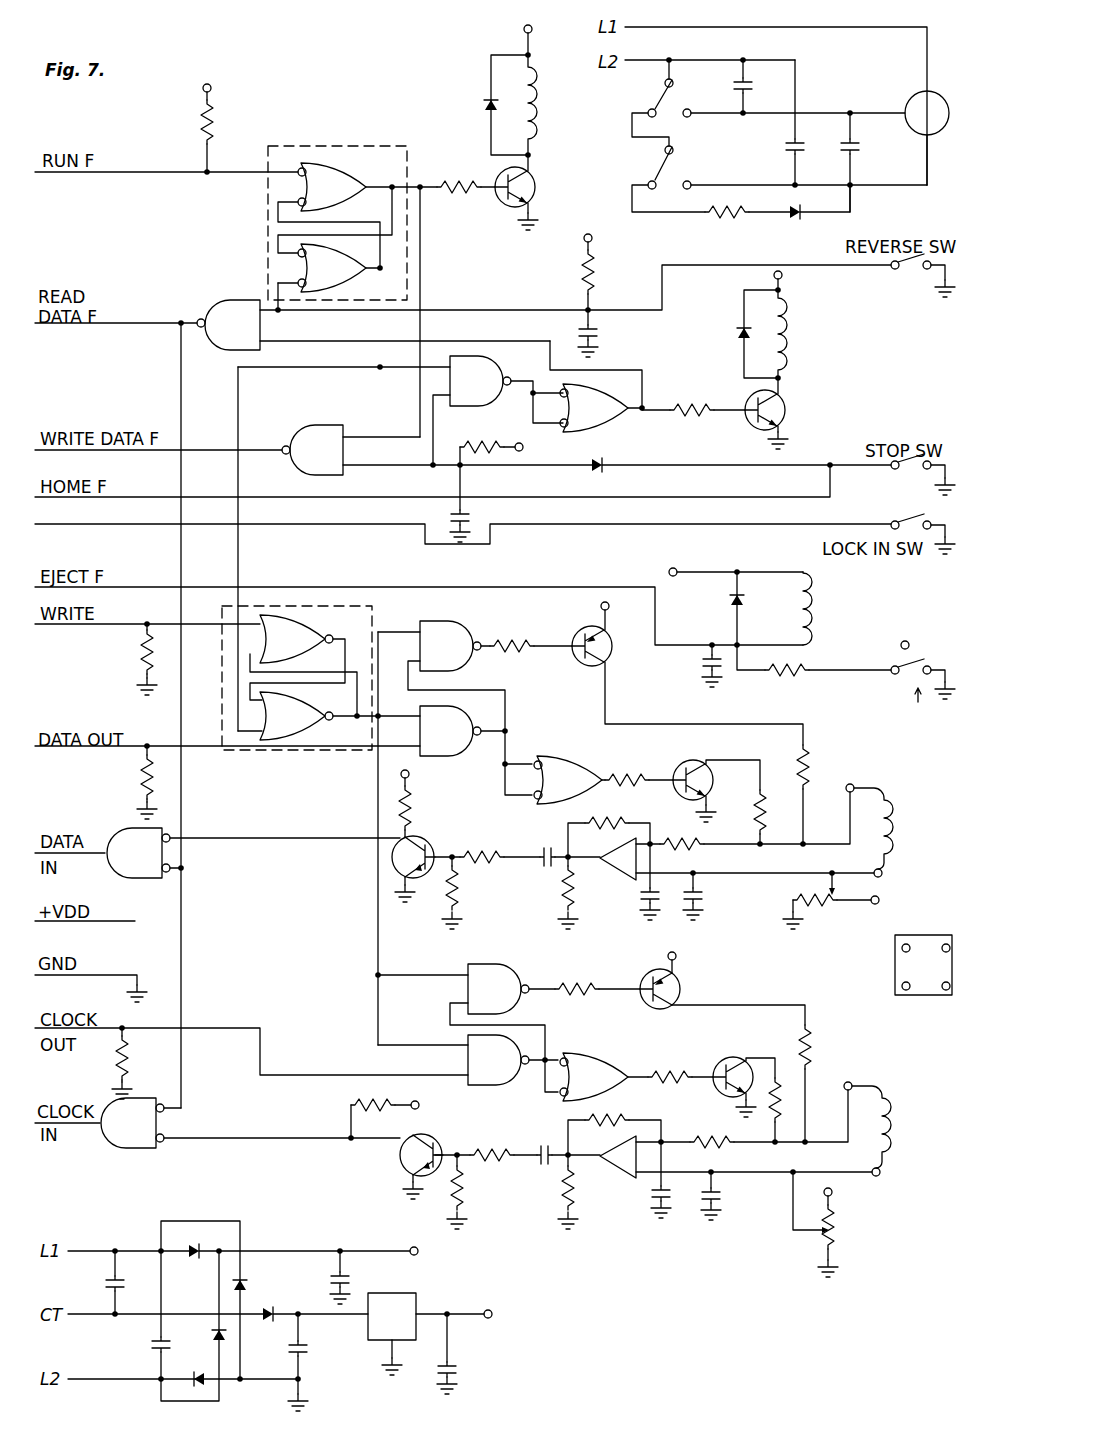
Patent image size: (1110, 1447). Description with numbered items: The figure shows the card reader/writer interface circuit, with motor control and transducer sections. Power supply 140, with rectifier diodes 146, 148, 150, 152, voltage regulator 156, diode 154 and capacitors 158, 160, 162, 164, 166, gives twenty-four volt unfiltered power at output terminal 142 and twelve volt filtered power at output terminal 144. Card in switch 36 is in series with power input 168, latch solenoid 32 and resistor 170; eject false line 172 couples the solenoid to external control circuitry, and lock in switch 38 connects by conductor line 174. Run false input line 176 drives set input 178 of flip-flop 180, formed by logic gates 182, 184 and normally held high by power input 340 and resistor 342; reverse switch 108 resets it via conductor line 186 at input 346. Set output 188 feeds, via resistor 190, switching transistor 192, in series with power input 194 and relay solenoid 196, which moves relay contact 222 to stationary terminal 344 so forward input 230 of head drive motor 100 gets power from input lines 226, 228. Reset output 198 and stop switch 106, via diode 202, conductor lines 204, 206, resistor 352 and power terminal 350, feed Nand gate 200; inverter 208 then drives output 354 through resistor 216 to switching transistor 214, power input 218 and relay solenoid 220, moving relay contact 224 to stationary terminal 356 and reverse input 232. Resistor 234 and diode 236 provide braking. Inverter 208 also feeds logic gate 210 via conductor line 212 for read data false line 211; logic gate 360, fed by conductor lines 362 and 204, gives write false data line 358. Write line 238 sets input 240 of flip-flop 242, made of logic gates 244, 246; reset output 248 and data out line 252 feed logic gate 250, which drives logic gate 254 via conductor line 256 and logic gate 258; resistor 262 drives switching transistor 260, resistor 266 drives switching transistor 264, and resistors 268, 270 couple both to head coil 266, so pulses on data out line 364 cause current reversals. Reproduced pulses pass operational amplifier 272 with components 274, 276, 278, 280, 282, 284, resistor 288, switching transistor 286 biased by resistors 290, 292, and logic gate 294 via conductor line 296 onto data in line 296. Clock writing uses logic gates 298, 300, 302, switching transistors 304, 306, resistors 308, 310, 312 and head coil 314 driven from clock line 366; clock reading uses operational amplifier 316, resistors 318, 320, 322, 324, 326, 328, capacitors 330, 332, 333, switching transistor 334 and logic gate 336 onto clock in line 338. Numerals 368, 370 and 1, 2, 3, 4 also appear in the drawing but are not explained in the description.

The solenoid 32 is at (812, 600).
The in/out switch 36 is at (914, 696).
The lock-in switch 38 is at (908, 518).
The motor 100 is at (919, 92).
The stop switch 106 is at (914, 474).
The reverse switch 108 is at (916, 280).
The power supply 140 is at (458, 1283).
The output terminal 142 is at (418, 1251).
The output terminal 144 is at (492, 1310).
The diode 146 is at (199, 1246).
The diode 148 is at (246, 1283).
The diode 150 is at (212, 1333).
The diode 152 is at (205, 1372).
The diode 154 is at (275, 1319).
The voltage regulator 156 is at (402, 1292).
The capacitor 158 is at (100, 1278).
The capacitor 160 is at (150, 1352).
The capacitor 162 is at (305, 1343).
The capacitor 164 is at (330, 1268).
The capacitor 166 is at (452, 1362).
The terminal 168 is at (677, 568).
The resistor 170 is at (790, 668).
The eject line 172 is at (380, 585).
The lock-in line 174 is at (145, 526).
The run line 176 is at (162, 172).
The gate 178 is at (296, 163).
The flip-flop 180 is at (375, 146).
The output line 182 is at (365, 179).
The gate 184 is at (345, 253).
The line 186 is at (455, 310).
The junction 188 is at (419, 183).
The resistor 190 is at (474, 194).
The transistor 192 is at (532, 181).
The terminal 194 is at (532, 29).
The relay coil 196 is at (539, 100).
The line 198 is at (377, 332).
The NAND gate 200 is at (508, 372).
The diode 202 is at (604, 455).
The line 204 is at (722, 464).
The line 206 is at (436, 428).
The gate 208 is at (632, 392).
The gate 210 is at (215, 301).
The read data line 211 is at (147, 323).
The line 212 is at (502, 333).
The transistor 214 is at (785, 398).
The resistor 216 is at (696, 408).
The terminal 218 is at (782, 277).
The relay coil 220 is at (790, 340).
The relay contact 222 is at (650, 178).
The relay contact 224 is at (655, 105).
The line L2 226 is at (633, 60).
The line L1 228 is at (746, 30).
The motor lead 230 is at (924, 138).
The motor lead 232 is at (890, 110).
The resistor 234 is at (703, 216).
The diode 236 is at (790, 218).
The write line 238 is at (100, 626).
The flip-flop 240 is at (252, 612).
The flip-flop 242 is at (375, 607).
The NOR gate 244 is at (320, 633).
The NOR gate 246 is at (318, 694).
The output line 248 is at (358, 736).
The NAND gate 250 is at (423, 709).
The line 252 is at (193, 752).
The NAND gate 254 is at (447, 618).
The line 256 is at (478, 690).
The gate 258 is at (558, 757).
The transistor 260 is at (696, 760).
The resistor 262 is at (644, 776).
The transistor 264 is at (610, 663).
The data track head 266 is at (520, 640).
The resistor 268 is at (769, 824).
The resistor 270 is at (812, 758).
The amplifier 272 is at (612, 878).
The capacitor 274 is at (544, 847).
The resistor 276 is at (608, 822).
The resistor 278 is at (694, 842).
The capacitor 280 is at (703, 902).
The capacitor 282 is at (640, 902).
The resistor 284 is at (560, 903).
The transistor 286 is at (415, 840).
The resistor 288 is at (492, 852).
The resistor 290 is at (410, 800).
The resistor 292 is at (458, 900).
The gate 294 is at (128, 828).
The data in line 296 is at (72, 866).
The NAND gate 298 is at (495, 965).
The NAND gate 300 is at (467, 1060).
The gate 302 is at (603, 1052).
The transistor 304 is at (682, 985).
The transistor 306 is at (728, 1055).
The resistor 308 is at (672, 1060).
The resistor 310 is at (812, 1050).
The resistor 312 is at (773, 1120).
The clock track head 314 is at (891, 1100).
The amplifier 316 is at (612, 1177).
The resistor 318 is at (717, 1134).
The resistor 320 is at (618, 1118).
The resistor 322 is at (566, 1195).
The resistor 324 is at (509, 1144).
The resistor 326 is at (462, 1190).
The resistor 328 is at (396, 1100).
The capacitor 330 is at (652, 1200).
The capacitor 332 is at (722, 1205).
The capacitor 333 is at (544, 1142).
The transistor 334 is at (425, 1130).
The gate 336 is at (140, 1094).
The clock in line 338 is at (70, 1140).
The terminal 340 is at (211, 89).
The resistor 342 is at (212, 120).
The relay contact 344 is at (687, 180).
The line 346 is at (280, 270).
The terminal 350 is at (524, 450).
The resistor 352 is at (490, 440).
The line 354 is at (630, 420).
The relay contact 356 is at (687, 108).
The write data line 358 is at (152, 452).
The gate 360 is at (305, 428).
The line 362 is at (418, 410).
The resistor 364 is at (130, 745).
The clock out line 366 is at (238, 1028).
The line 368 is at (243, 750).
The line 370 is at (235, 425).
The head pin 1 is at (897, 1033).
The head pin 2 is at (897, 1081).
The head pin 3 is at (898, 914).
The head pin 4 is at (898, 862).